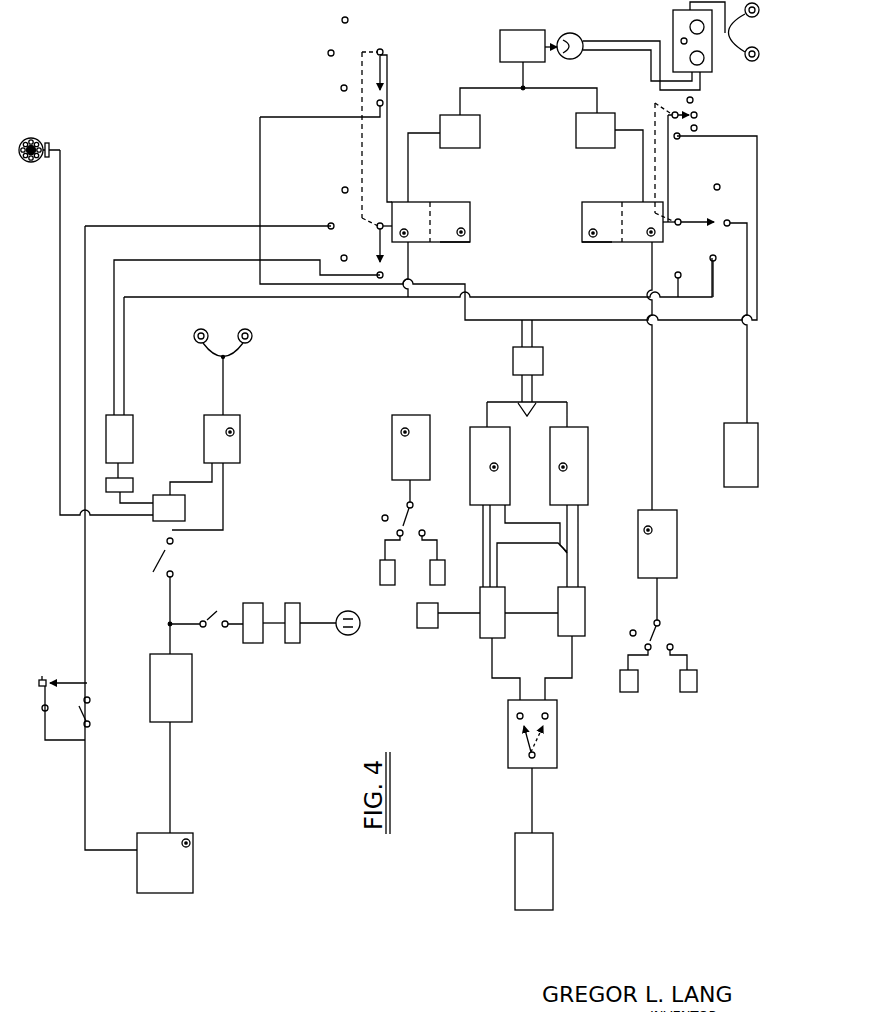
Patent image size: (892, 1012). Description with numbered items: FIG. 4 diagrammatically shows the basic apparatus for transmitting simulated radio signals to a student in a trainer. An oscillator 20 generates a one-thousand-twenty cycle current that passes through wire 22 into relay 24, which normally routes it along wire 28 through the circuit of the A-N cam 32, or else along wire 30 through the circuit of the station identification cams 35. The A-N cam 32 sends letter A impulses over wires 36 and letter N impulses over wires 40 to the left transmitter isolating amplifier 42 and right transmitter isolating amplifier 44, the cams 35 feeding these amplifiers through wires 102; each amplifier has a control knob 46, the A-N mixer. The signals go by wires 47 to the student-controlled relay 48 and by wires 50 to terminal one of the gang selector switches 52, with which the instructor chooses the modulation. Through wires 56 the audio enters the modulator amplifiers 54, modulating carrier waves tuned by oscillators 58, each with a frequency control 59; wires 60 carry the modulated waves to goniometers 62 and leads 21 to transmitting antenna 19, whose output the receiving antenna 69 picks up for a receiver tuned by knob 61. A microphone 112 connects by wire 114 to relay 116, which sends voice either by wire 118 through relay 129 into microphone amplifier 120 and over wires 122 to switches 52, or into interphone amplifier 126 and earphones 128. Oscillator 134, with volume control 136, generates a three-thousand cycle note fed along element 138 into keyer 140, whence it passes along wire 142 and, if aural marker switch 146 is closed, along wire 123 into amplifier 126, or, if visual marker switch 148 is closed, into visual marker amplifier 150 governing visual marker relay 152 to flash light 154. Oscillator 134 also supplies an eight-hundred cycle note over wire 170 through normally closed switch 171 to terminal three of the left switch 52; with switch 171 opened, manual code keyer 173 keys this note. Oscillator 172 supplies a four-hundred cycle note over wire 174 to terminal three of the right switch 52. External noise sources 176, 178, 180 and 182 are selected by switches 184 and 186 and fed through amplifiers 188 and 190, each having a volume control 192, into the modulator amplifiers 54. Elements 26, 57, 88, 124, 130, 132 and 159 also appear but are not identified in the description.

The transmitting antenna 19 is at (507, 46).
The oscillator 20 is at (517, 887).
The wires 21 is at (460, 100).
The wire 22 is at (531, 805).
The relay 24 is at (514, 742).
The switch blade 26 is at (525, 732).
The wire 28 is at (510, 679).
The wire 30 is at (573, 665).
The A-N cam 32 is at (482, 636).
The station identification cams 35 is at (560, 630).
The wires 36 is at (499, 575).
The wires 40 is at (489, 548).
The left transmitter isolating amplifier 42 is at (477, 500).
The right transmitter isolating amplifier 44 is at (588, 432).
The control knob 46 is at (560, 470).
The wires 47 is at (528, 412).
The relay 48 is at (519, 362).
The wires 50 is at (533, 333).
The gang selector switch 52 is at (338, 160).
The modulator amplifier 54 is at (402, 210).
The wires 56 is at (381, 222).
The control knob 57 is at (407, 236).
The oscillator 58 is at (595, 210).
The control 59 is at (586, 234).
The wires 60 is at (412, 166).
The tuning knob 61 is at (700, 57).
The goniometer 62 is at (580, 135).
The receiving antenna 69 is at (566, 38).
The control 88 is at (428, 626).
The wires 102 is at (579, 567).
The microphone 112 is at (35, 138).
The wire 114 is at (60, 342).
The relay 116 is at (183, 518).
The wire 118 is at (140, 503).
The microphone amplifier 120 is at (114, 420).
The wires 122 is at (123, 342).
The wire 123 is at (226, 504).
The lead 124 is at (192, 482).
The interphone amplifier 126 is at (238, 455).
The earphones 128 is at (238, 346).
The relay 129 is at (113, 482).
The lead 130 is at (221, 380).
The volume control 132 is at (235, 430).
The oscillator 134 is at (153, 890).
The volume control 136 is at (190, 838).
The element 138 is at (170, 770).
The keyer 140 is at (155, 685).
The wire 142 is at (168, 598).
The aural marker switch 146 is at (158, 553).
The visual marker switch 148 is at (214, 615).
The visual marker amplifier 150 is at (253, 645).
The visual marker relay 152 is at (290, 603).
The light 154 is at (350, 611).
The panel 159 is at (682, 40).
The wire 170 is at (86, 812).
The switch 171 is at (80, 707).
The oscillator 172 is at (724, 436).
The manual code keyer 173 is at (41, 680).
The wire 174 is at (747, 358).
The external modulation source 176 is at (380, 567).
The external modulation source 178 is at (432, 572).
The external modulation source 180 is at (630, 693).
The external modulation source 182 is at (688, 693).
The switch 184 is at (404, 520).
The switch 186 is at (652, 632).
The amplifier 188 is at (392, 467).
The amplifier 190 is at (678, 538).
The volume control 192 is at (402, 428).